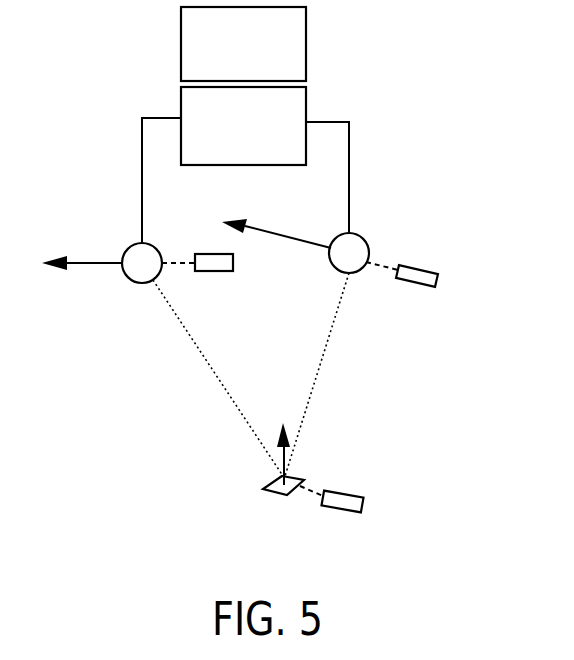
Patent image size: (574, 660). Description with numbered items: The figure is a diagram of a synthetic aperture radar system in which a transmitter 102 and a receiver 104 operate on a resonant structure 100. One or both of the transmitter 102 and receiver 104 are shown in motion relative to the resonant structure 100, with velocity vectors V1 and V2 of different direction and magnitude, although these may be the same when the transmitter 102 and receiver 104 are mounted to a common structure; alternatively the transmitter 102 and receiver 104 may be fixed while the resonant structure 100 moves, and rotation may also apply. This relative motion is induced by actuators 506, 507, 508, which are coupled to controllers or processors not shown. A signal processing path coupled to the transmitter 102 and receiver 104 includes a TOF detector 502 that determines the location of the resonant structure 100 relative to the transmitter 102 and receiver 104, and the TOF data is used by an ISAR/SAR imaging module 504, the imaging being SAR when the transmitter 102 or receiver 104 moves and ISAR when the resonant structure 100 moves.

The ISAR/SAR imaging module 504 is at (308, 43).
The TOF detector 502 is at (308, 110).
The transmitter 102 is at (132, 283).
The receiver 104 is at (377, 250).
The actuator 506 is at (222, 272).
The actuator 507 is at (413, 285).
The resonant structure 100 is at (273, 489).
The actuator 508 is at (342, 500).